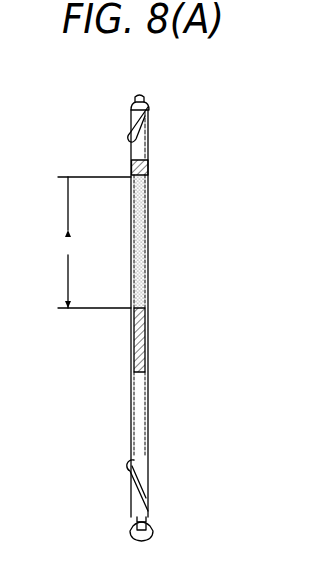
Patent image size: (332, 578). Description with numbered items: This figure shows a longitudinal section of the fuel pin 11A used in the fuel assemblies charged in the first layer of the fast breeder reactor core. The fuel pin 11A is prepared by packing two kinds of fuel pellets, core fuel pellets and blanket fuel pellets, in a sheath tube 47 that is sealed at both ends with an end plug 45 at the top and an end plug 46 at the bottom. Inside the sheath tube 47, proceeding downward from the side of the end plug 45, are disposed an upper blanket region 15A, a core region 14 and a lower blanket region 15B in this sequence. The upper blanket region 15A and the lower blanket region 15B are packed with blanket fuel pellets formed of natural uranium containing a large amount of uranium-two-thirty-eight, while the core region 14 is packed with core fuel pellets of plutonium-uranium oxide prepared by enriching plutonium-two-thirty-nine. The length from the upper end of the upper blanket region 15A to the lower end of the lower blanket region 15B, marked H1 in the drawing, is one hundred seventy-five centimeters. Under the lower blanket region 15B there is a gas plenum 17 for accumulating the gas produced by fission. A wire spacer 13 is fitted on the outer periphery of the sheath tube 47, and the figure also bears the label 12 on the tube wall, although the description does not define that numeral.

The end plug 45 is at (131, 104).
The upper blanket region 15A is at (149, 162).
The tube 12 is at (131, 212).
The core region 14 is at (144, 244).
The lower blanket region 15B is at (149, 329).
The fuel pin 11A is at (131, 358).
The sheath tube 47 is at (131, 413).
The gas plenum 17 is at (142, 437).
The wire spacer 13 is at (128, 469).
The end plug 46 is at (156, 533).
The length from upper end of upper blanket region to lower end of lower blanket regi H1 is at (94, 242).